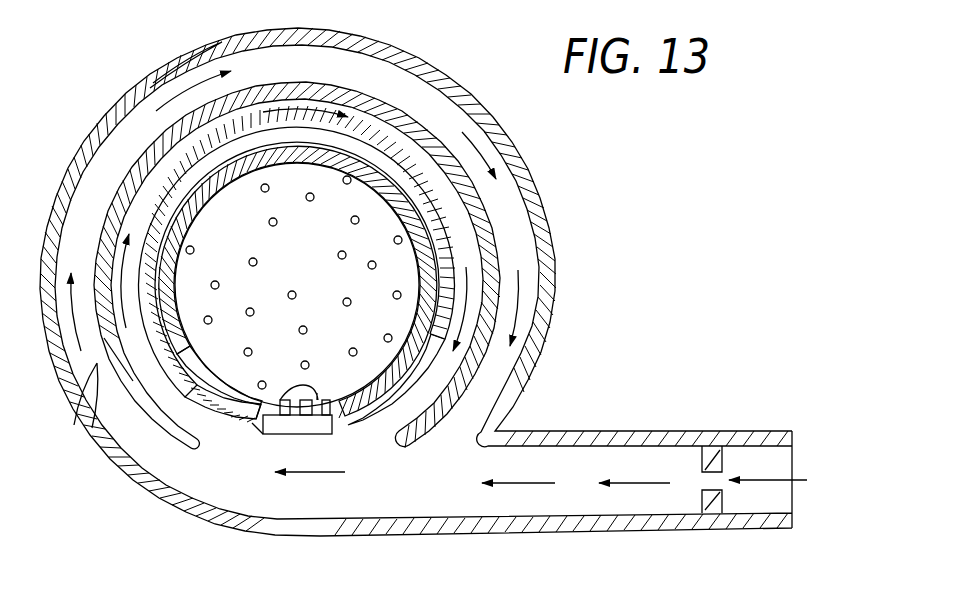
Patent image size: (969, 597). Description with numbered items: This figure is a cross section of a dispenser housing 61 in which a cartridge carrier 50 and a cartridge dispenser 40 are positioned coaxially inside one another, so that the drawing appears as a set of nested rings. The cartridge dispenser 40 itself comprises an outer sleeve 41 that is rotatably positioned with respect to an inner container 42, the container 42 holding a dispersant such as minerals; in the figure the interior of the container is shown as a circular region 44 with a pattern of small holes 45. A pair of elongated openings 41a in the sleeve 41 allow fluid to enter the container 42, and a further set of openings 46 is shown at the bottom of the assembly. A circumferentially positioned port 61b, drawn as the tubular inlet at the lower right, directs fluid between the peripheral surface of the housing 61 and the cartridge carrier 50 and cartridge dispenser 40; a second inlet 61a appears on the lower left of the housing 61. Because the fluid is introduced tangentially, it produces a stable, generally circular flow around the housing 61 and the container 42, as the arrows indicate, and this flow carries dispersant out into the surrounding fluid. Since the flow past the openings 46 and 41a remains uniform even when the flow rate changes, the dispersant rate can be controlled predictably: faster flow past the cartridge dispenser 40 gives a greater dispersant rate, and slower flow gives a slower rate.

The cartridge dispenser 40 is at (374, 141).
The outer sleeve 41 is at (393, 167).
The elongated openings 41a is at (257, 427).
The inner container 42 is at (418, 237).
The catalyst bed 44 is at (320, 272).
The holes 45 is at (307, 198).
The openings 46 is at (300, 437).
The cartridge carrier 50 is at (487, 253).
The dispenser housing 61 is at (543, 205).
The first inlet 61a is at (80, 417).
The circumferential port 61b is at (678, 527).